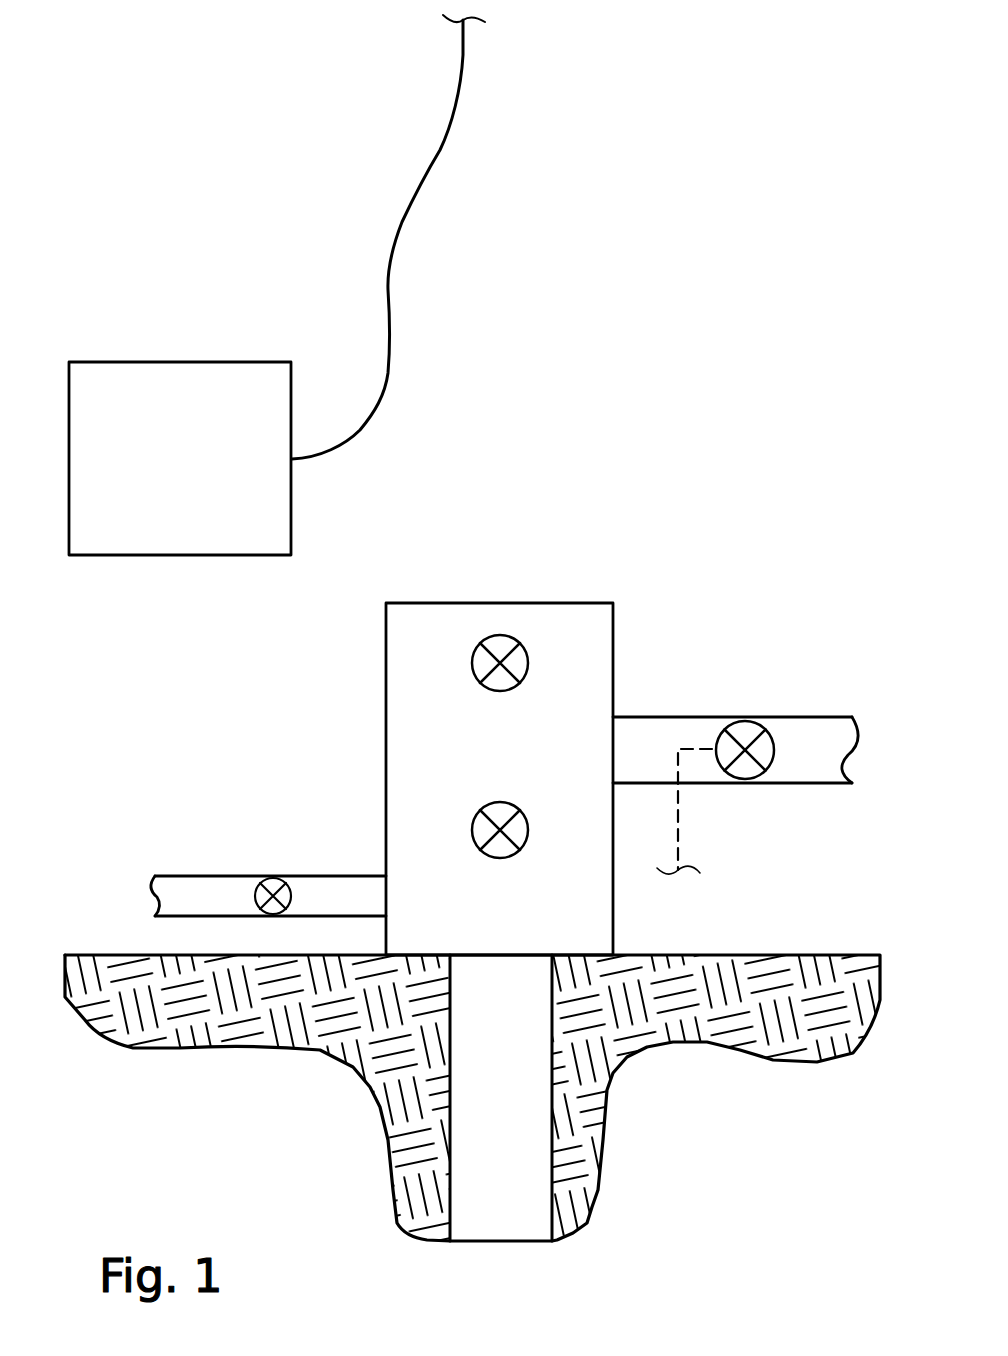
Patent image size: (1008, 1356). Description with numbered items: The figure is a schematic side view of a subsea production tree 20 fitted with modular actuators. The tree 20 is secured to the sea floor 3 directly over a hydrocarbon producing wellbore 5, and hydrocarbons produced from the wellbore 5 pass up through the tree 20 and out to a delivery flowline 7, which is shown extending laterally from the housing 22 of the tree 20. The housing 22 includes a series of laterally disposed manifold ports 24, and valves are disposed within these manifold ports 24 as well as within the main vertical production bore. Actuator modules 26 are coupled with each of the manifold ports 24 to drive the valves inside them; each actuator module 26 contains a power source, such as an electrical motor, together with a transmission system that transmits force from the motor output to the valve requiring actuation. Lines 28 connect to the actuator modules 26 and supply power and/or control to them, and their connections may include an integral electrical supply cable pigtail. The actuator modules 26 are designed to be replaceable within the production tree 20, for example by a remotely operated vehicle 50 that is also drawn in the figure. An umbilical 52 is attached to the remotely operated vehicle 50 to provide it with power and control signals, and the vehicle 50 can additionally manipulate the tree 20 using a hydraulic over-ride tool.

The sea floor 3 is at (722, 955).
The hydrocarbon producing wellbore 5 is at (528, 1119).
The delivery flowline 7 is at (815, 730).
The subsea production tree 20 is at (702, 587).
The housing 22 is at (410, 757).
The manifold ports 24 is at (615, 716).
The actuator modules 26 is at (470, 667).
The lines 28 is at (680, 827).
The remotely operated vehicle 50 is at (207, 468).
The umbilical 52 is at (412, 197).